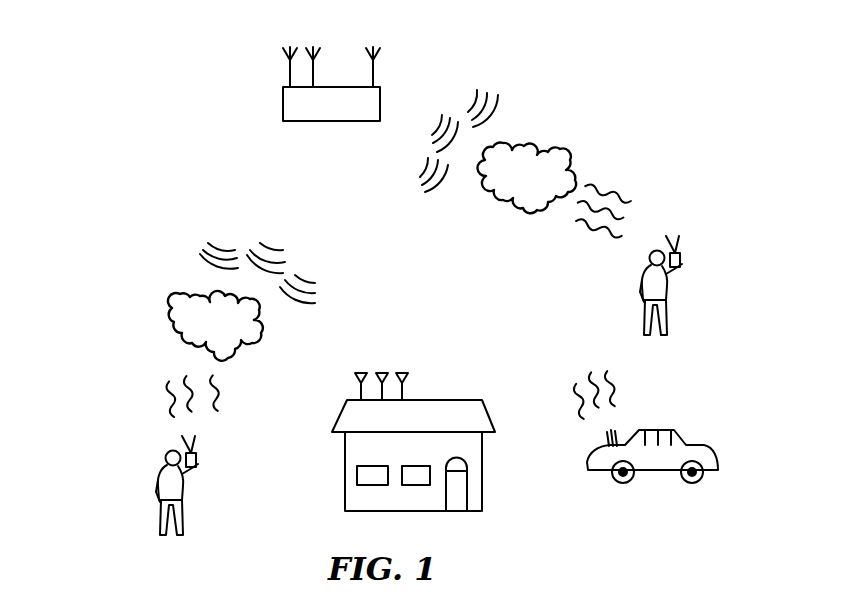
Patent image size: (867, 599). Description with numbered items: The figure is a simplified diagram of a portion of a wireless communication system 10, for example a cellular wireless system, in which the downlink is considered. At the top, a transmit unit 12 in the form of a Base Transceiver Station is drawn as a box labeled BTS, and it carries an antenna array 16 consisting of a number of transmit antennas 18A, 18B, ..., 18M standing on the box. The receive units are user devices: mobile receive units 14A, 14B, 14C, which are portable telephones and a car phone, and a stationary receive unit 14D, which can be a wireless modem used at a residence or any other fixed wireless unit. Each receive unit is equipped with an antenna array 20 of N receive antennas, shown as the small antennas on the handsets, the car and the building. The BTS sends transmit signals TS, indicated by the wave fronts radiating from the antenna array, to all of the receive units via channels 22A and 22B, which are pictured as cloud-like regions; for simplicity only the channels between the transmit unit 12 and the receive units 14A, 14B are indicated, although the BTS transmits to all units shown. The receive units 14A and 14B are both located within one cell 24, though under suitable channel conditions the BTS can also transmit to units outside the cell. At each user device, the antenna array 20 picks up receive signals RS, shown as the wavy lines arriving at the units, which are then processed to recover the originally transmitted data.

The wireless communication system 10 is at (663, 67).
The transmit unit 12 is at (283, 100).
The mobile receive unit 14A is at (684, 256).
The mobile receive unit 14B is at (200, 455).
The mobile receive unit 14C is at (708, 446).
The stationary receive unit 14D is at (434, 400).
The antenna array 16 is at (222, 54).
The transmit antenna 18A is at (289, 70).
The transmit antenna 18B is at (315, 68).
The transmit antenna 18M is at (383, 68).
The antenna array 20 is at (690, 227).
The channel 22A is at (508, 207).
The channel 22B is at (181, 293).
The cell 24 is at (408, 279).
The transmit signals TS is at (516, 91).
The receive signals RS is at (630, 179).